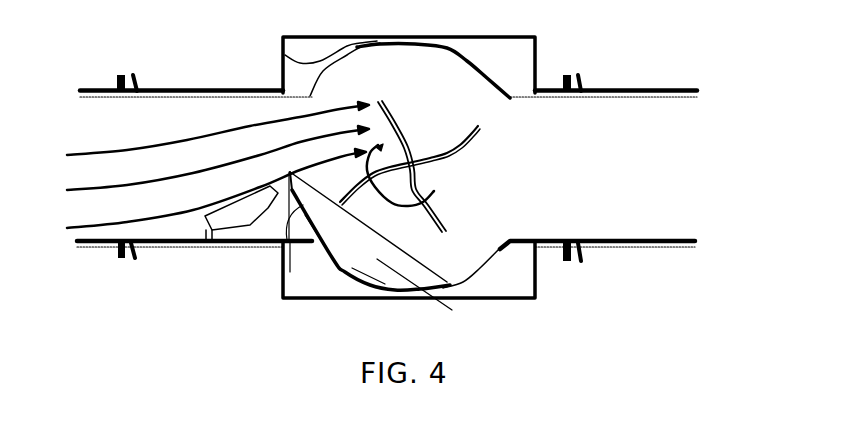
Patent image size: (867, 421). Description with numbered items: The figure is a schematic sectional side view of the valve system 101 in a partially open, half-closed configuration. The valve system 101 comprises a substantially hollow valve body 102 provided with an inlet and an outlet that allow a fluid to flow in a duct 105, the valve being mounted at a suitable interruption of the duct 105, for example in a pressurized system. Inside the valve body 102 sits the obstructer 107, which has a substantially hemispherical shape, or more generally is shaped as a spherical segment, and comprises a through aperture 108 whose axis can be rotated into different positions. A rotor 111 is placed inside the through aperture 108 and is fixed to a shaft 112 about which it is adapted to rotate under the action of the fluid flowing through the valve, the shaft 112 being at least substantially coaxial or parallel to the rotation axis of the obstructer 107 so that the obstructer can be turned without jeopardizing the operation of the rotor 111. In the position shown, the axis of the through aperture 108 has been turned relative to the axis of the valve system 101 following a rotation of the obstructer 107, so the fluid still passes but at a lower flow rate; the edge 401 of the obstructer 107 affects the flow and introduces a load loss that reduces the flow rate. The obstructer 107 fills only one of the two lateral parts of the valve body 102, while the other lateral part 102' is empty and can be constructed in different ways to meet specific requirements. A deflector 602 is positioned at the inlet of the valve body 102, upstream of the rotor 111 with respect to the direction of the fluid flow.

The valve system 101 is at (553, 52).
The valve body 102 is at (330, 239).
The other lateral part 102' is at (370, 65).
The duct 105 is at (110, 248).
The obstructer 107 is at (429, 304).
The through aperture 108 is at (521, 216).
The rotor 111 is at (396, 108).
The shaft 112 is at (436, 174).
The edge 401 is at (290, 235).
The deflector 602 is at (212, 246).